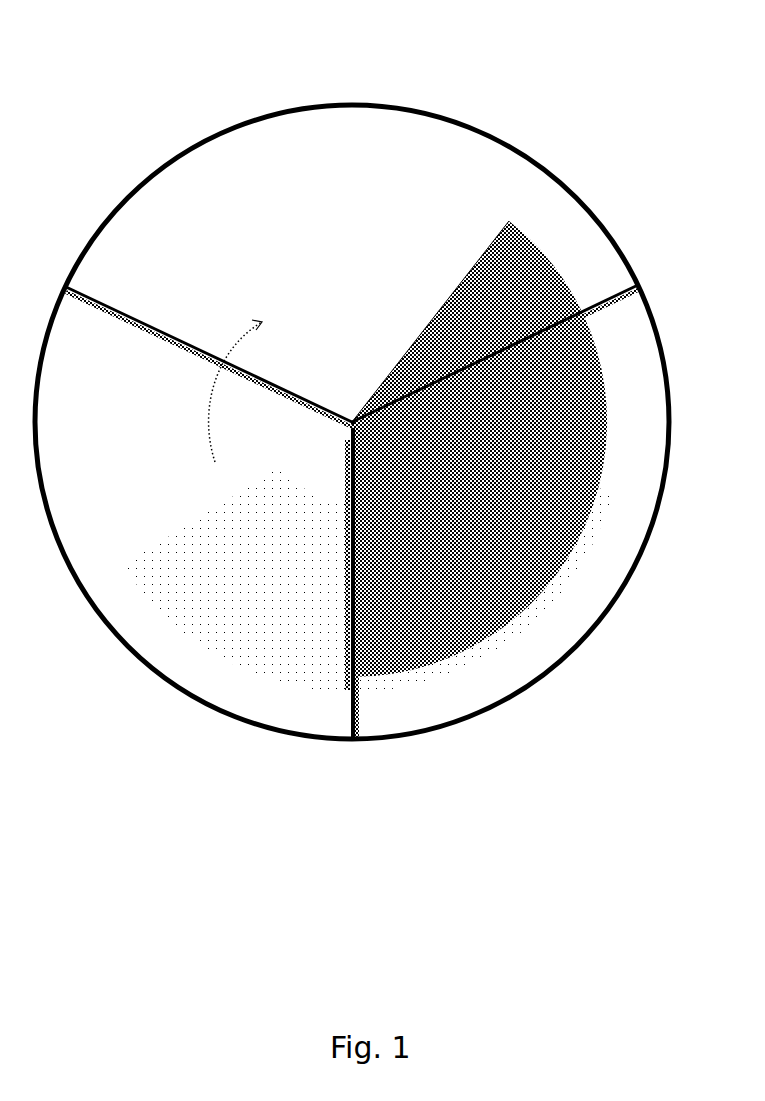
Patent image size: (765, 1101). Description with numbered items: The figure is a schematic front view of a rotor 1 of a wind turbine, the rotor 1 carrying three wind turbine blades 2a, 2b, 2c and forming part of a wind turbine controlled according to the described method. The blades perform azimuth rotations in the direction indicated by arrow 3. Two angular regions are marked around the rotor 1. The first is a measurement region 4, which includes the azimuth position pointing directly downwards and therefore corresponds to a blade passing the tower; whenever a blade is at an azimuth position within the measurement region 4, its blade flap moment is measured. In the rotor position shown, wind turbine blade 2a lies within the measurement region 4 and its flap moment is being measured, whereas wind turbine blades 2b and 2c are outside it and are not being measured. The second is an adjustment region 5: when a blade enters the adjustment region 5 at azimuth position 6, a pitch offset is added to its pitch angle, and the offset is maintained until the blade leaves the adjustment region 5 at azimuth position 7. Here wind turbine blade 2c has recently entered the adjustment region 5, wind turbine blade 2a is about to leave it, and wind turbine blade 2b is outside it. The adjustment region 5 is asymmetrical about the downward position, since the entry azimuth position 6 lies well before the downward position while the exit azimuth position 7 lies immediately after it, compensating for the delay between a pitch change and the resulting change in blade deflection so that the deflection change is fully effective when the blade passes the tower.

The rotor 1 is at (554, 127).
The wind turbine blade 2a is at (350, 598).
The wind turbine blade 2b is at (193, 349).
The wind turbine blade 2c is at (514, 349).
The arrow 3 is at (203, 407).
The measurement region 4 is at (223, 578).
The adjustment region 5 is at (503, 482).
The azimuth position 6 is at (455, 290).
The azimuth position 7 is at (330, 587).